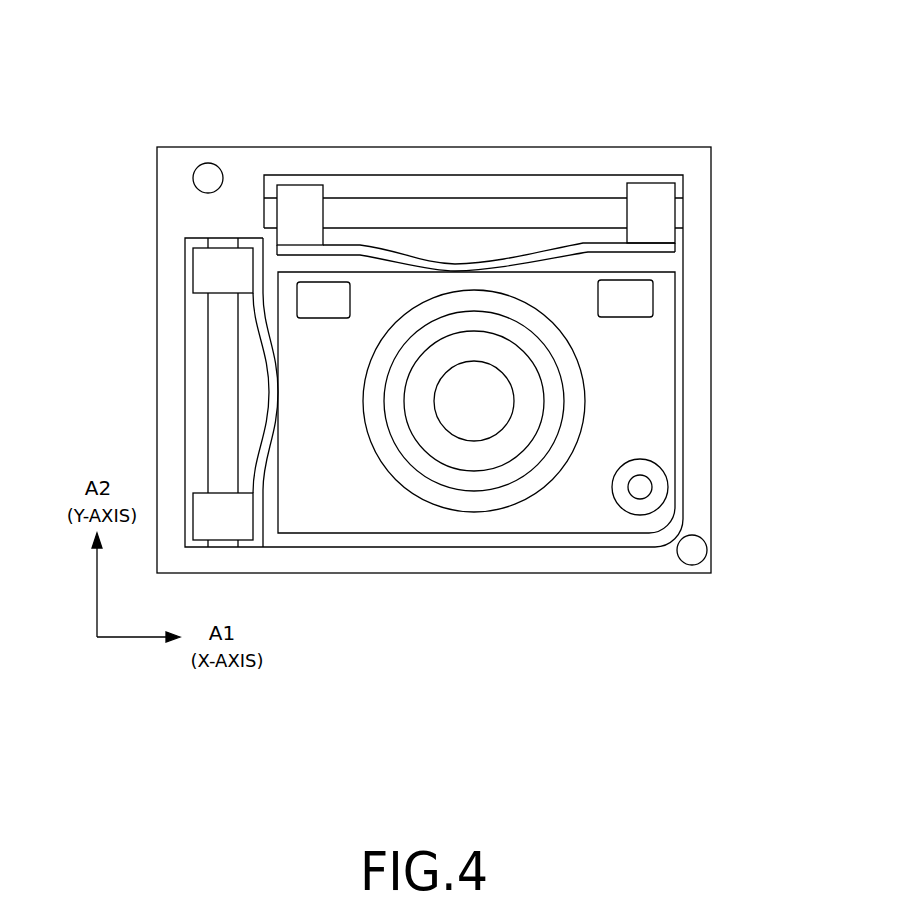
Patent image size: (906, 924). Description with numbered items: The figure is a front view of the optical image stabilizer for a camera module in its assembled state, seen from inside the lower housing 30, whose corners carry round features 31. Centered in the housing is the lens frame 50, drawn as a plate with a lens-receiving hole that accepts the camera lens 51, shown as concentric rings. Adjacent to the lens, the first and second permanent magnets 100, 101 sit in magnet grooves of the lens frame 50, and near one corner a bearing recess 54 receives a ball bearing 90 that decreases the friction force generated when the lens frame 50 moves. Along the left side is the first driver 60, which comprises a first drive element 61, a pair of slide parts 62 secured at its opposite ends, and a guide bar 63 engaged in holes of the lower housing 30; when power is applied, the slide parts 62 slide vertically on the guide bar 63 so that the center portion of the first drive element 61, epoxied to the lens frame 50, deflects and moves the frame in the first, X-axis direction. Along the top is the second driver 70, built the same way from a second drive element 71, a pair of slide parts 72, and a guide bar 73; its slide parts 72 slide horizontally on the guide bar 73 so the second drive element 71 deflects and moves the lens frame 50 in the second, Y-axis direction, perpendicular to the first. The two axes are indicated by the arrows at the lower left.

The lower housing 30 is at (340, 147).
The fastening hole 31 is at (205, 180).
The lens frame 50 is at (645, 414).
The camera lens 51 is at (498, 392).
The bearing recess 54 is at (645, 462).
The first driver 60 is at (67, 267).
The first drive element 61 is at (262, 322).
The slide parts 62 is at (202, 273).
The guide bar 63 is at (218, 392).
The second driver 70 is at (498, 50).
The second drive element 71 is at (560, 246).
The slide parts 72 is at (650, 197).
The guide bar 73 is at (508, 207).
The ball bearing 90 is at (643, 488).
The first permanent magnet 100 is at (328, 298).
The second permanent magnet 101 is at (643, 298).